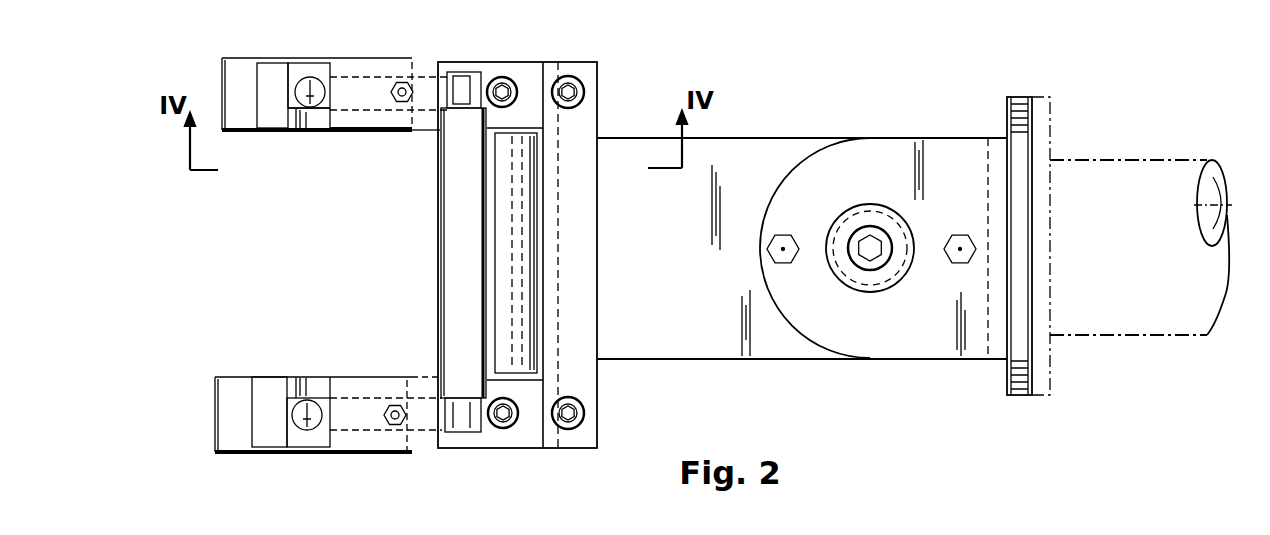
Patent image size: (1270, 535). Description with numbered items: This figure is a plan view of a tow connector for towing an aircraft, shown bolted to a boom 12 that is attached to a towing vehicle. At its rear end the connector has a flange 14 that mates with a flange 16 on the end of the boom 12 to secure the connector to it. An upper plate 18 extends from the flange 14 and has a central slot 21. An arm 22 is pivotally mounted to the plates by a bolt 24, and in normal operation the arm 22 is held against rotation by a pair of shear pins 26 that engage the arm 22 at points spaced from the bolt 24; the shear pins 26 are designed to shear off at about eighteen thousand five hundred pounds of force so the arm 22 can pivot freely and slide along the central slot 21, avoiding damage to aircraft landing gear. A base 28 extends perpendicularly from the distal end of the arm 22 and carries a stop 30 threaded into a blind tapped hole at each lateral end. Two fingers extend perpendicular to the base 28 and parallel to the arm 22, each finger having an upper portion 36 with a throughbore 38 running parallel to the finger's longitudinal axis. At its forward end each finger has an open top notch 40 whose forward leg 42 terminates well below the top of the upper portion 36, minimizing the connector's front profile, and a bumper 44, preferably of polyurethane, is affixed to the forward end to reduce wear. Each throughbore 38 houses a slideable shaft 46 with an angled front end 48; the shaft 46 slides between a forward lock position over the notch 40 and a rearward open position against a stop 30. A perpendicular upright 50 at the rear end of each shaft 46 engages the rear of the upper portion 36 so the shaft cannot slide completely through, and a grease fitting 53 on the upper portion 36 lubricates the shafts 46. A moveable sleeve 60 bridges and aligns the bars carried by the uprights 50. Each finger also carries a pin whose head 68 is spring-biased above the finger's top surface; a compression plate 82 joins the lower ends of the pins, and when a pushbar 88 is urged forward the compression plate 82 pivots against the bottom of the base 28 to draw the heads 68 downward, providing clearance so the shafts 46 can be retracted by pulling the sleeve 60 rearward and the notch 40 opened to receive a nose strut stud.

The boom 12 is at (1138, 160).
The flange 14 is at (1010, 121).
The flange 16 is at (1041, 137).
The upper plate 18 is at (838, 160).
The central slot 21 is at (842, 268).
The arm 22 is at (690, 284).
The bolt 24 is at (882, 242).
The shear pins 26 is at (786, 236).
The base 28 is at (587, 213).
The stop 30 is at (577, 78).
The upper portion 36 is at (384, 122).
The throughbore 38 is at (366, 80).
The open top notch 40 is at (308, 120).
The forward leg 42 is at (264, 130).
The bumper 44 is at (224, 60).
The slideable shaft 46 is at (325, 78).
The angled front end 48 is at (300, 83).
The upright 50 is at (458, 78).
The grease fitting 53 is at (403, 81).
The moveable sleeve 60 is at (447, 264).
The head 68 is at (513, 80).
The compression plate 82 is at (572, 350).
The pushbar 88 is at (530, 309).